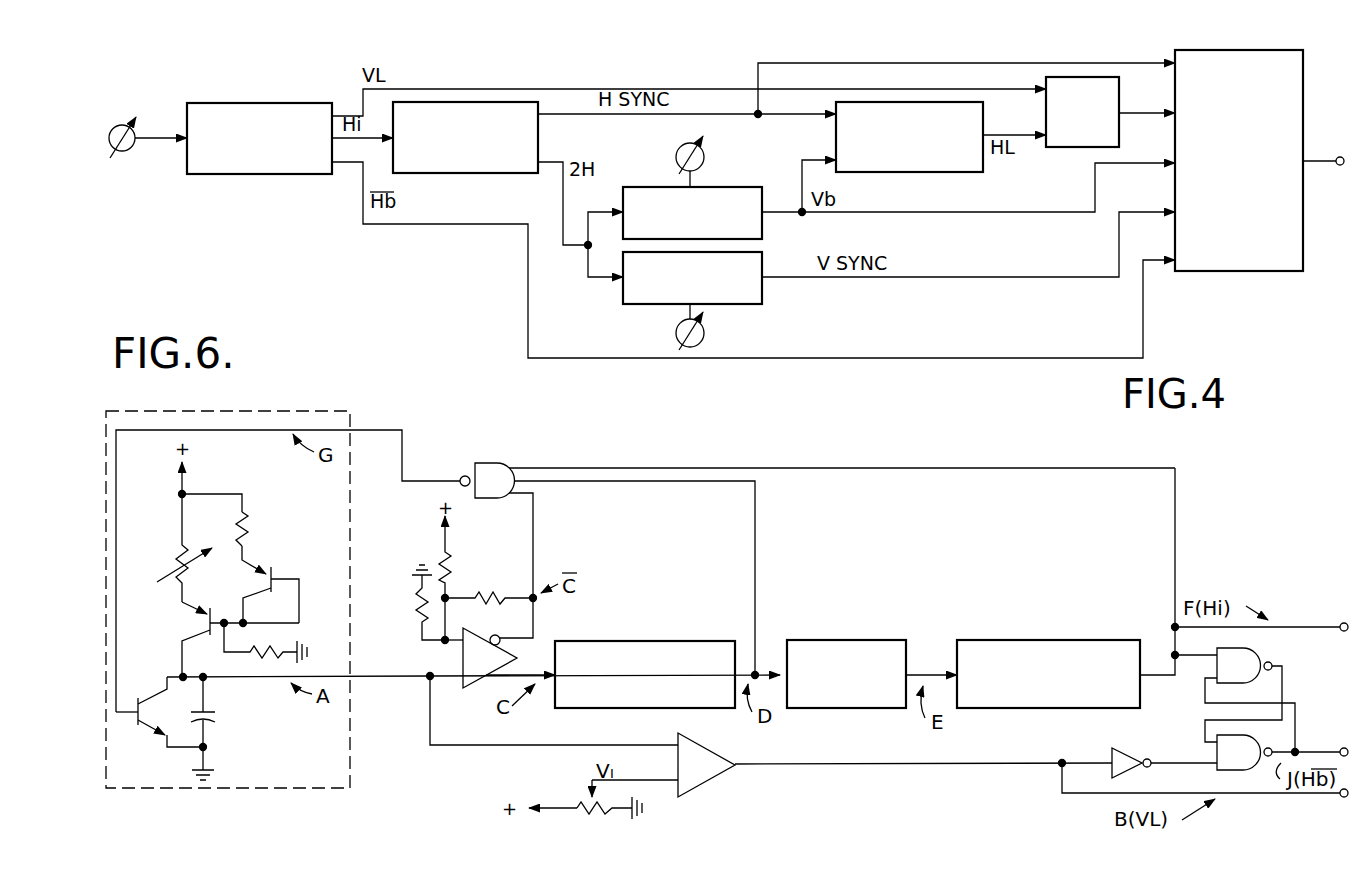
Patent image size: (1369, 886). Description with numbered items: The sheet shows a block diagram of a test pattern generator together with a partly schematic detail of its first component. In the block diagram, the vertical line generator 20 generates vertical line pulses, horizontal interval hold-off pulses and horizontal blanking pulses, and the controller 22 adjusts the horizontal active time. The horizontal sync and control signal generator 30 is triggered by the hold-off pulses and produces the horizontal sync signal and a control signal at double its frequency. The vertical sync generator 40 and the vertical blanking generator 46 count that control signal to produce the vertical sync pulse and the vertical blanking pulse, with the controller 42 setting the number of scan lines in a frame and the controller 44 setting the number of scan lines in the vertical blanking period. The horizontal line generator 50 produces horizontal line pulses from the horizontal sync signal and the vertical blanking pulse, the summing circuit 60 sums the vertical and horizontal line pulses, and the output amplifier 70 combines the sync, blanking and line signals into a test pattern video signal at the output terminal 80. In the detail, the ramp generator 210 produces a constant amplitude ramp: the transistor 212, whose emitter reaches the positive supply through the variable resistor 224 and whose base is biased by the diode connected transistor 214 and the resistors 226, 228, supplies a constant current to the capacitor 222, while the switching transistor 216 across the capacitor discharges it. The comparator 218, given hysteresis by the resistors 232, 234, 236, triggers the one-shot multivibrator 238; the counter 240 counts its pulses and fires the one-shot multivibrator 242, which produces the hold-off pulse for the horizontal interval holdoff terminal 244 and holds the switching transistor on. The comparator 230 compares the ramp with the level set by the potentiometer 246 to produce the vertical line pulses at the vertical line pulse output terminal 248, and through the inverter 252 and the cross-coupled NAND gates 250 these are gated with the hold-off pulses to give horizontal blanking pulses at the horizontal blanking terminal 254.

In FIG. 4, the vertical line generator 20 is at (237, 102).
In FIG. 4, the controller 22 is at (148, 144).
In FIG. 4, the horizontal sync and control signal generator 30 is at (466, 174).
In FIG. 4, the vertical sync generator 40 is at (740, 305).
In FIG. 4, the controller 42 is at (677, 337).
In FIG. 6, the controller 42 is at (488, 463).
In FIG. 4, the controller 44 is at (677, 153).
In FIG. 4, the vertical blanking generator 46 is at (735, 188).
In FIG. 4, the horizontal line generator 50 is at (960, 173).
In FIG. 4, the summing circuit 60 is at (1119, 93).
In FIG. 4, the output amplifier 70 is at (1283, 272).
In FIG. 4, the output terminal 80 is at (1340, 157).
In FIG. 6, the ramp generator 210 is at (240, 409).
In FIG. 6, the transistor 212 is at (206, 631).
In FIG. 6, the diode connected transistor 214 is at (254, 572).
In FIG. 6, the switching transistor 216 is at (152, 736).
In FIG. 6, the comparator 218 is at (475, 690).
In FIG. 6, the capacitor 222 is at (213, 719).
In FIG. 6, the variable resistor 224 is at (178, 567).
In FIG. 6, the resistor 226 is at (250, 519).
In FIG. 6, the resistor 228 is at (262, 655).
In FIG. 6, the comparator 230 is at (720, 758).
In FIG. 6, the resistor 232 is at (476, 597).
In FIG. 6, the resistor 234 is at (449, 561).
In FIG. 6, the resistor 236 is at (415, 607).
In FIG. 6, the one-shot multivibrator 238 is at (660, 641).
In FIG. 6, the counter 240 is at (848, 641).
In FIG. 6, the one-shot multivibrator 242 is at (1060, 641).
In FIG. 6, the horizontal interval holdoff terminal 244 is at (1341, 623).
In FIG. 6, the potentiometer 246 is at (586, 803).
In FIG. 6, the vertical line pulse output terminal 248 is at (1340, 800).
In FIG. 6, the cross-coupled NAND gates 250 is at (1205, 709).
In FIG. 6, the inverter 252 is at (1110, 752).
In FIG. 6, the horizontal blanking terminal 254 is at (1342, 748).